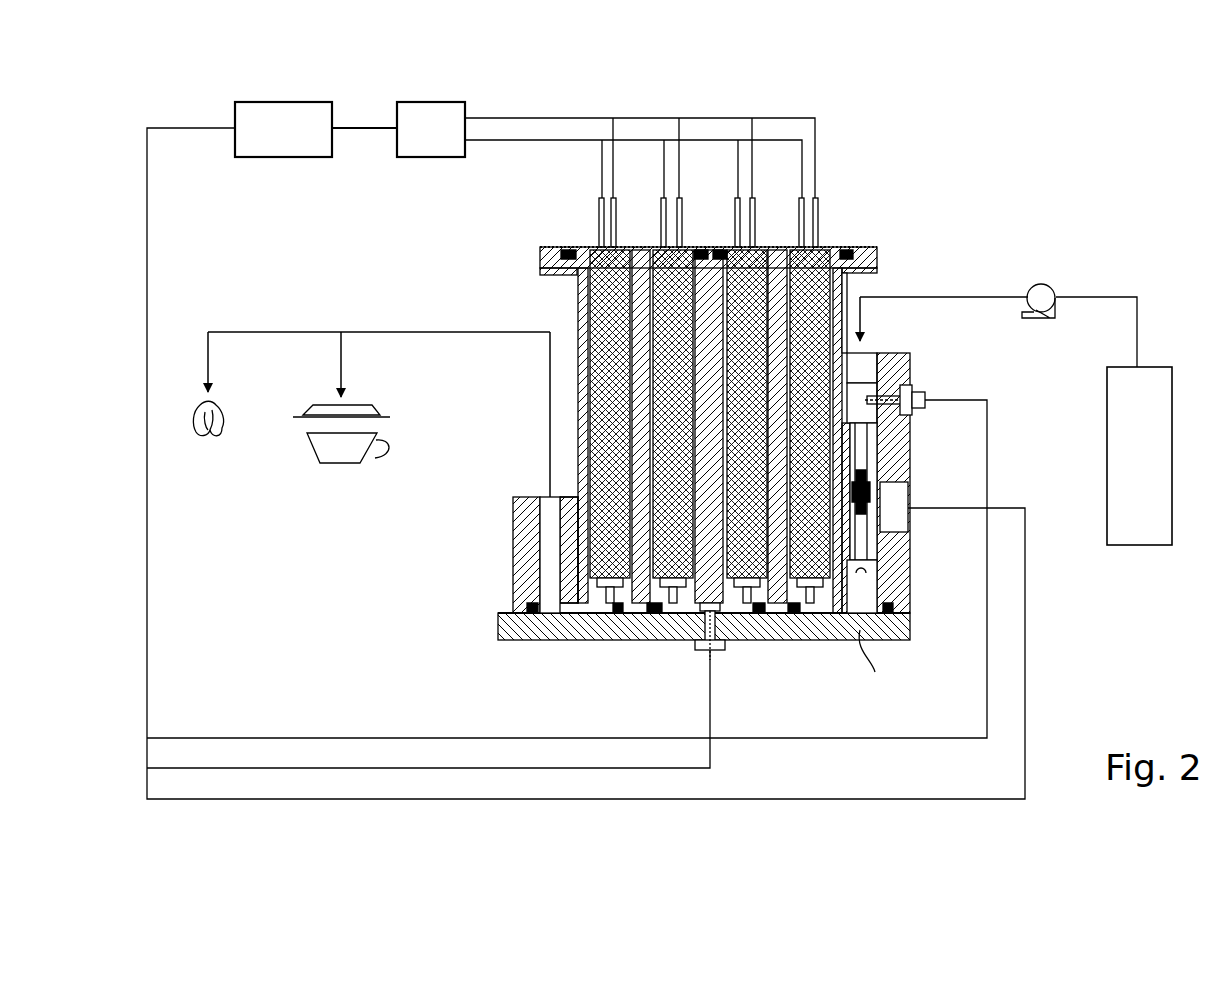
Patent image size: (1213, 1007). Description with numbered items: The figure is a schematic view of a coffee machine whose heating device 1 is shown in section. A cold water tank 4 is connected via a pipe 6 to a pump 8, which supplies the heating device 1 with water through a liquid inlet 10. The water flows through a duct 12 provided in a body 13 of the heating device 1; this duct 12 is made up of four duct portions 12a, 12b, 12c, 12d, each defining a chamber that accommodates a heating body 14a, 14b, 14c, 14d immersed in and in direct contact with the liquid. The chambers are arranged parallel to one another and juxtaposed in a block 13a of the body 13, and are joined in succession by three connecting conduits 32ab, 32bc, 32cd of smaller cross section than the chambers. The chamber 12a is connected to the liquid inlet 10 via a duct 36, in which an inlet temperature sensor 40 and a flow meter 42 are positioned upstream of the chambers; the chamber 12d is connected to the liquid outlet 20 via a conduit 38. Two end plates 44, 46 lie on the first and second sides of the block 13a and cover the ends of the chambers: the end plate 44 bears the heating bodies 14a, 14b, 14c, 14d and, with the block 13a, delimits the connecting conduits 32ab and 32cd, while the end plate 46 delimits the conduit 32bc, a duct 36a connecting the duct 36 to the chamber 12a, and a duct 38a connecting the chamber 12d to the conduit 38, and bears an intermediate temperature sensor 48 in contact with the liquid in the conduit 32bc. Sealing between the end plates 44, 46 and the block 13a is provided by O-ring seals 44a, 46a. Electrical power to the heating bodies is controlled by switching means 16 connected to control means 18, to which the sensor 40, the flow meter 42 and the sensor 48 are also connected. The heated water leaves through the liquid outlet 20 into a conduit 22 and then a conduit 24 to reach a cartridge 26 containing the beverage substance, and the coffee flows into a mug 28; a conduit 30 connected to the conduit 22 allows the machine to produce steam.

The heating device 1 is at (709, 443).
The cold water tank 4 is at (1158, 530).
The pipe 6 is at (1140, 332).
The pump 8 is at (1047, 297).
The liquid inlet 10 is at (867, 353).
The duct 12 is at (673, 489).
The duct portion 12a is at (808, 585).
The duct portion 12b is at (745, 585).
The duct portion 12c is at (670, 585).
The duct portion 12d is at (605, 585).
The body 13 is at (705, 385).
The block 13a is at (845, 288).
The heating body 14a is at (817, 243).
The heating body 14b is at (790, 243).
The heating body 14c is at (688, 243).
The heating body 14d is at (595, 243).
The switching means 16 is at (442, 112).
The control means 18 is at (295, 112).
The liquid outlet 20 is at (550, 497).
The conduit 22 is at (362, 330).
The conduit 24 is at (343, 373).
The cartridge 26 is at (313, 412).
The mug 28 is at (318, 452).
The conduit 30 is at (255, 330).
The connecting conduit 32ab is at (783, 250).
The connecting conduit 32bc is at (735, 580).
The connecting conduit 32cd is at (641, 256).
The duct 36 is at (905, 375).
The duct 36a is at (884, 659).
The conduit 38 is at (510, 555).
The duct 38a is at (572, 605).
The temperature sensor 40 is at (917, 392).
The flow meter 42 is at (870, 523).
The end plate 44 is at (679, 216).
The O-ring seal 44a is at (552, 244).
The end plate 46 is at (702, 609).
The O-ring seal 46a is at (527, 608).
The intermediate temperature sensor 48 is at (713, 650).